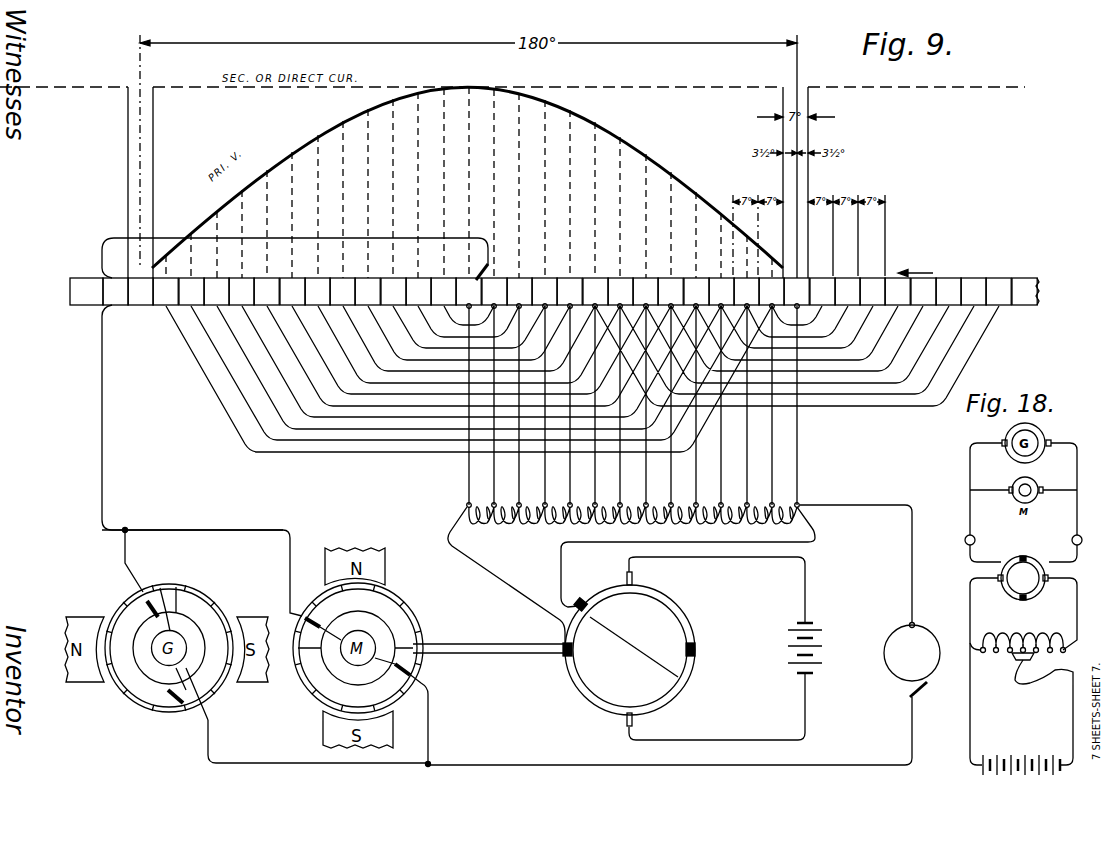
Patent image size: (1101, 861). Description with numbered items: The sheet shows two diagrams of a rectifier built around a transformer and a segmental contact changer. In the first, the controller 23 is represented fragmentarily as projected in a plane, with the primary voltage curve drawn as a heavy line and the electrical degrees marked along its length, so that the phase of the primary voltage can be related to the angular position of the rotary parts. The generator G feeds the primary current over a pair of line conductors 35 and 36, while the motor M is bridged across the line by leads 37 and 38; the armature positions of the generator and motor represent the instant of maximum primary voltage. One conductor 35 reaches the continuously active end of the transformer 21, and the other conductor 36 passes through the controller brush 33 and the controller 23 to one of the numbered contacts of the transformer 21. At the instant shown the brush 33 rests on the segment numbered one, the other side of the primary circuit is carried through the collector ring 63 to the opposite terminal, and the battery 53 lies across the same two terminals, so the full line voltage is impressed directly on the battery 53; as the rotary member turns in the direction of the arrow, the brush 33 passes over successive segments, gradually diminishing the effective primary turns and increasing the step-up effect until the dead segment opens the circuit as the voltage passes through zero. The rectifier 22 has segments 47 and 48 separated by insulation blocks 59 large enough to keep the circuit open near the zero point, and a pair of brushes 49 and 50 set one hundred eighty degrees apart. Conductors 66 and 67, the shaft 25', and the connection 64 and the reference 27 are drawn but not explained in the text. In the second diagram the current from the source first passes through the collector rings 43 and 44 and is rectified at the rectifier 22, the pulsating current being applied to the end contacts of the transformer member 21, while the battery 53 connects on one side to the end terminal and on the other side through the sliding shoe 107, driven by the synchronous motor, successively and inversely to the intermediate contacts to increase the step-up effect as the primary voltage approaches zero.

In FIG. 9, the controller 23 is at (554, 301).
In FIG. 9, the brush 27 is at (975, 278).
In FIG. 9, the controller brush 33 is at (488, 268).
In FIG. 9, the line conductor 35 is at (352, 242).
In FIG. 9, the lead 37 is at (192, 521).
In FIG. 9, the line conductor 36 is at (224, 768).
In FIG. 9, the lead 38 is at (426, 742).
In FIG. 9, the transformer 21 is at (639, 513).
In FIG. 18, the transformer 21 is at (1018, 641).
In FIG. 9, the conductor 67 is at (562, 576).
In FIG. 9, the conductor 66 is at (512, 586).
In FIG. 9, the shaft 25' is at (488, 637).
In FIG. 9, the rectifier 22 is at (637, 650).
In FIG. 18, the rectifier 22 is at (1023, 584).
In FIG. 9, the segment 48 is at (594, 698).
In FIG. 9, the segment 47 is at (670, 612).
In FIG. 9, the insulation block 59 is at (578, 651).
In FIG. 9, the brush 49 is at (633, 578).
In FIG. 9, the brush 50 is at (633, 724).
In FIG. 9, the battery 53 is at (791, 651).
In FIG. 18, the battery 53 is at (1018, 759).
In FIG. 9, the collector ring 63 is at (912, 652).
In FIG. 9, the conductor 64 is at (913, 578).
In FIG. 18, the collector ring 43 is at (978, 541).
In FIG. 18, the collector ring 44 is at (1072, 541).
In FIG. 18, the sliding contact or shoe 107 is at (1017, 661).